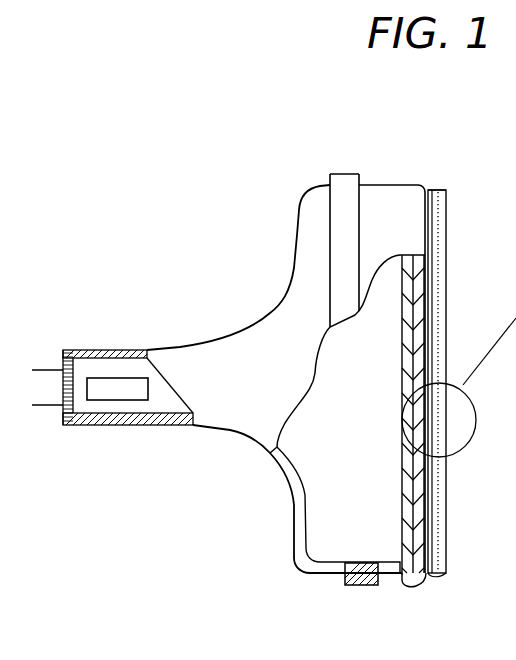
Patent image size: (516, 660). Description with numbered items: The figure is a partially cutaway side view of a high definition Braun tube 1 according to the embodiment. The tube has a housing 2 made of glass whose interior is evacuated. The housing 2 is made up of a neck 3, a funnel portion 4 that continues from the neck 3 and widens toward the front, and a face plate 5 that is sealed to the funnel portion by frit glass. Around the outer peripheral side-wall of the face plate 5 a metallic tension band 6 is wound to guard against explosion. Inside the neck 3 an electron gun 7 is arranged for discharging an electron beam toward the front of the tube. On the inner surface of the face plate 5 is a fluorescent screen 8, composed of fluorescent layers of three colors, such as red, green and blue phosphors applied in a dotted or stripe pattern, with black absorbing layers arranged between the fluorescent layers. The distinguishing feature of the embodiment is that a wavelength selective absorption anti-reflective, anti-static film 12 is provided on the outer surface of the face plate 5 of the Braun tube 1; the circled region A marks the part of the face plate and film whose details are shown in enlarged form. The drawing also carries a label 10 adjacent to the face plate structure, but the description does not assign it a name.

The Braun tube 1 is at (190, 605).
The housing 2 is at (241, 333).
The neck 3 is at (110, 427).
The funnel portion 4 is at (248, 442).
The face plate 5 is at (412, 587).
The metallic tension band 6 is at (367, 587).
The electron gun 7 is at (103, 387).
The fluorescent screen 8 is at (400, 367).
The display panel assembly 10 is at (472, 185).
The wavelength selective absorption anti-reflective, anti-static film 12 is at (448, 565).
The enlarged region A is at (471, 440).